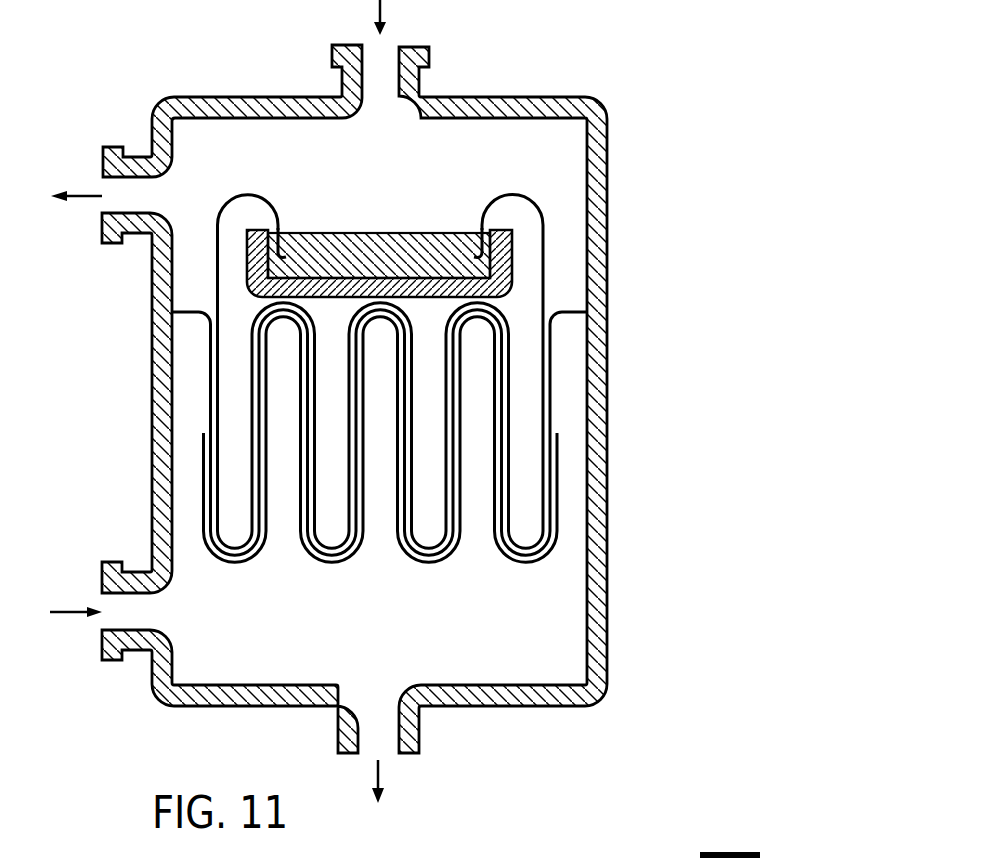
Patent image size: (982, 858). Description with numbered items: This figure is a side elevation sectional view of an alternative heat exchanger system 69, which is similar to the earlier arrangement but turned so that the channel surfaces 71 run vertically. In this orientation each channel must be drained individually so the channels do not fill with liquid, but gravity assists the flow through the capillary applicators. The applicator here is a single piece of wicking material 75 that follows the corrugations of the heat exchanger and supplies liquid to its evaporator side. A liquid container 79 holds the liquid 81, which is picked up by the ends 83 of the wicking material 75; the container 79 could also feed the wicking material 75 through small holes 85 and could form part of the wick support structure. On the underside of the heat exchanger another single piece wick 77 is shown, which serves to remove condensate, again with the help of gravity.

The heat exchanger system 69 is at (607, 135).
The channel surfaces 71 is at (550, 372).
The wicking material 75 is at (540, 209).
The single piece wick 77 is at (557, 470).
The liquid container 79 is at (335, 292).
The liquid 81 is at (292, 232).
The ends of wick 83 is at (506, 287).
The small holes 85 is at (378, 292).